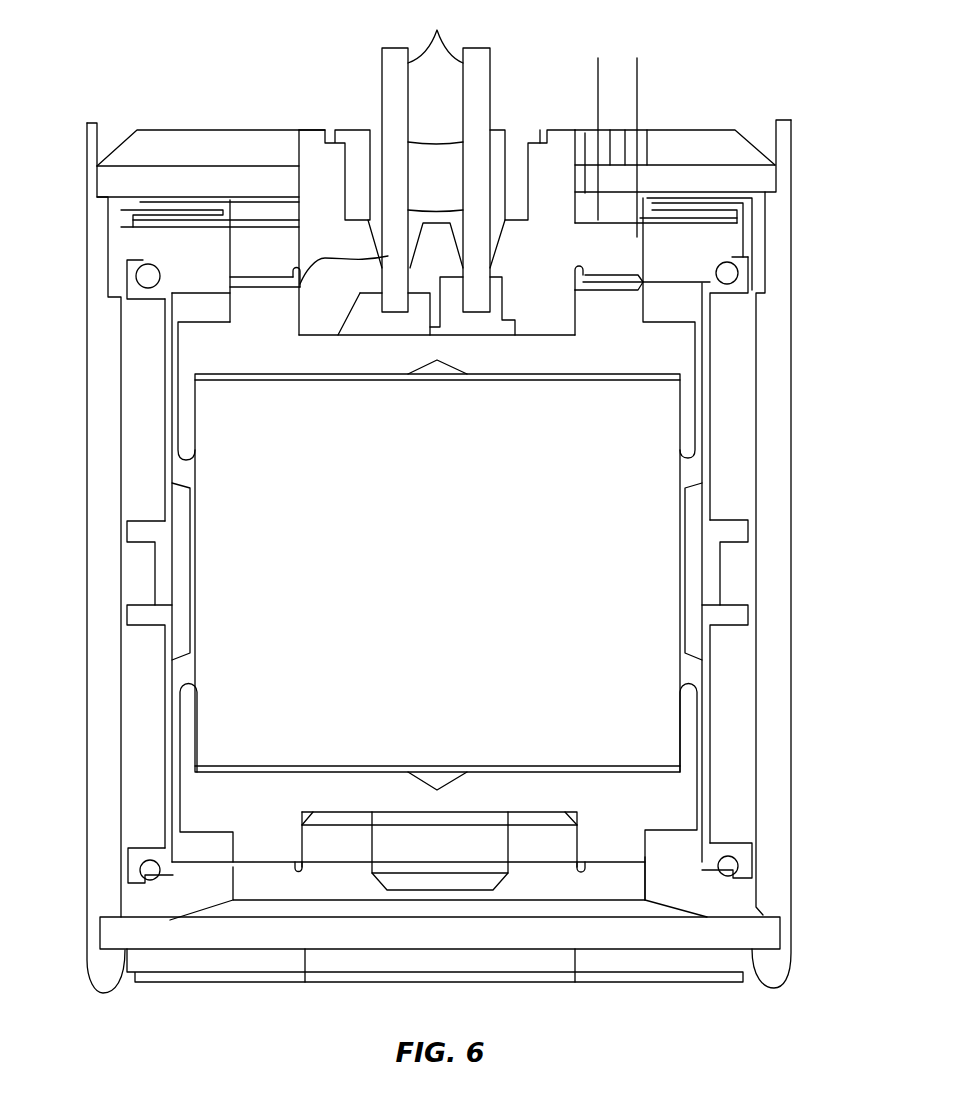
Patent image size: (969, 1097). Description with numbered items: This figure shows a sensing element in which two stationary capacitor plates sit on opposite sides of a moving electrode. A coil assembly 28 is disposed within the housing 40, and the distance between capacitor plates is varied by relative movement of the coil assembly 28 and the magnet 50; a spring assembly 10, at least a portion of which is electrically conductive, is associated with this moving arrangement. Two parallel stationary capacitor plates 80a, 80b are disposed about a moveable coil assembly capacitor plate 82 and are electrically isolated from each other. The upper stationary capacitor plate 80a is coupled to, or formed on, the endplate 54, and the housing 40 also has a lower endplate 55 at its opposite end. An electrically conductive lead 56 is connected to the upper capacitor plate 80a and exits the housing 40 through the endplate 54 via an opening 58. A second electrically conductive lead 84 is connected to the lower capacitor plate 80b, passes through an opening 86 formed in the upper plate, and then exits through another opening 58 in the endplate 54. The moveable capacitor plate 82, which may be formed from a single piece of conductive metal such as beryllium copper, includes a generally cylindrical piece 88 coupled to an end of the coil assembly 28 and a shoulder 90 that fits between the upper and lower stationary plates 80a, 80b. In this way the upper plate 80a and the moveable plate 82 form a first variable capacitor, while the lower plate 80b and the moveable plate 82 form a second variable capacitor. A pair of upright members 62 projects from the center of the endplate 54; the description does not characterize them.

The spring assembly 10 is at (683, 283).
The coil assembly 28 is at (740, 618).
The housing 40 is at (785, 550).
The magnet 50 is at (423, 587).
The endplate 54 is at (722, 142).
The lower endplate 55 is at (683, 962).
The electrically conductive lead 56 is at (638, 72).
The opening 58 is at (590, 140).
The terminal pins 62 is at (436, 156).
The upper stationary capacitor plate 80a is at (717, 192).
The lower stationary capacitor plate 80b is at (718, 228).
The moveable coil assembly capacitor plate 82 is at (127, 205).
The second electrically conductive lead 84 is at (597, 73).
The opening 86 is at (582, 150).
The generally cylindrical piece 88 is at (130, 260).
The shoulder 90 is at (167, 215).